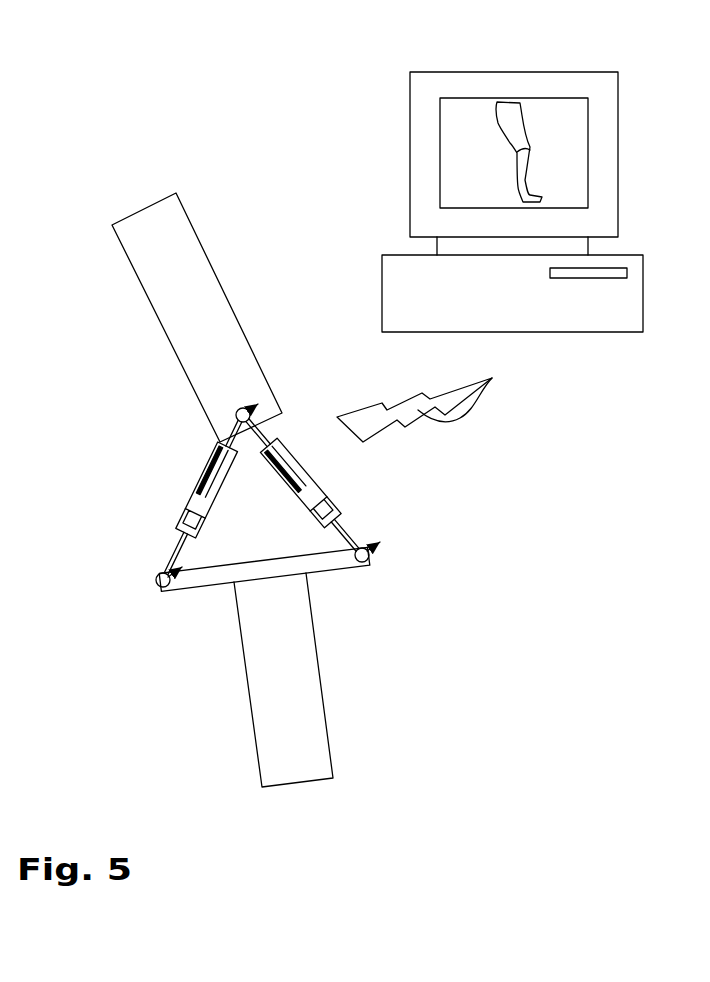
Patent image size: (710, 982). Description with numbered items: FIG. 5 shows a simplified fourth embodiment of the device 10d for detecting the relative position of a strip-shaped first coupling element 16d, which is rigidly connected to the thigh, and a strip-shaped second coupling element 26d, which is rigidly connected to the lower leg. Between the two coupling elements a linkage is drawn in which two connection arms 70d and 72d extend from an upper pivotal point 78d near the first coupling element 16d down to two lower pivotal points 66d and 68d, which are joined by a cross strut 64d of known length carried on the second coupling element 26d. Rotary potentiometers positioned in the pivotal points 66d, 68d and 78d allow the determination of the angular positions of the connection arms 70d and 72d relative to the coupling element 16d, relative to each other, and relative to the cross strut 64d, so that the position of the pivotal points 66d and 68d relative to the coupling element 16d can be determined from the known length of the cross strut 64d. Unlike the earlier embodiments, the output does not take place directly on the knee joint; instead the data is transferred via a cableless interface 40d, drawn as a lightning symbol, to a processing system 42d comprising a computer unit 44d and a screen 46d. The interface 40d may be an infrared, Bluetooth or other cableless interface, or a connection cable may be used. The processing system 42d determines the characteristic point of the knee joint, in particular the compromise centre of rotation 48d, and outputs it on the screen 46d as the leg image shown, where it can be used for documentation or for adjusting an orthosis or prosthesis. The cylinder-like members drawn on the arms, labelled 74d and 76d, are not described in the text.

The device 10d is at (502, 635).
The first coupling element 16d is at (150, 237).
The second coupling element 26d is at (292, 723).
The interface 40d is at (445, 422).
The processing system 42d is at (486, 265).
The computer unit 44d is at (628, 315).
The screen 46d is at (608, 140).
The compromise centre of rotation 48d is at (520, 147).
The cross strut 64d is at (270, 570).
The pivotal point 66d is at (155, 587).
The pivotal point 68d is at (372, 562).
The connection arm 70d is at (162, 540).
The connection arm 72d is at (356, 517).
The first actuator cylinder 74d is at (188, 476).
The second actuator cylinder 76d is at (312, 465).
The pivotal point 78d is at (235, 417).